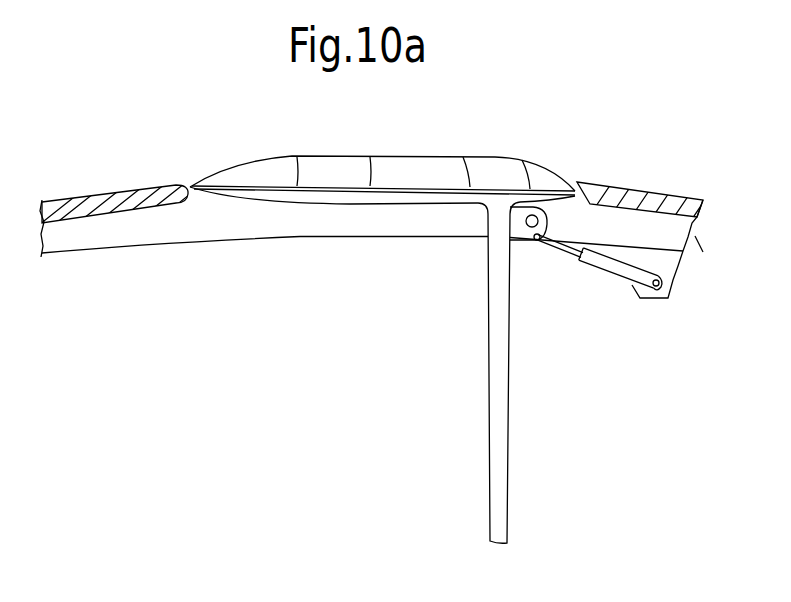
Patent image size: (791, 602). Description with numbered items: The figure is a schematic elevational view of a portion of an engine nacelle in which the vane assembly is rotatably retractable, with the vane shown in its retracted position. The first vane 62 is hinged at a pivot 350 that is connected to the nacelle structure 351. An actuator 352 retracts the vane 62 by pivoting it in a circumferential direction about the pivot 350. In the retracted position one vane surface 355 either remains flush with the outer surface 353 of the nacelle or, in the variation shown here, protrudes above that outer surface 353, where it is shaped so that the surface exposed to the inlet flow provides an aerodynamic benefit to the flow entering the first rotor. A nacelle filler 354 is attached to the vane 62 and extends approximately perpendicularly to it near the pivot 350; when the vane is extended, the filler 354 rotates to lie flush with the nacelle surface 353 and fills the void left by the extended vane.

The first vane 62 is at (382, 149).
The pivot 350 is at (554, 222).
The nacelle structure 351 is at (226, 236).
The actuator 352 is at (590, 278).
The outer surface of the nacelle 353 is at (102, 188).
The nacelle filler 354 is at (481, 402).
The vane surface 355 is at (475, 153).